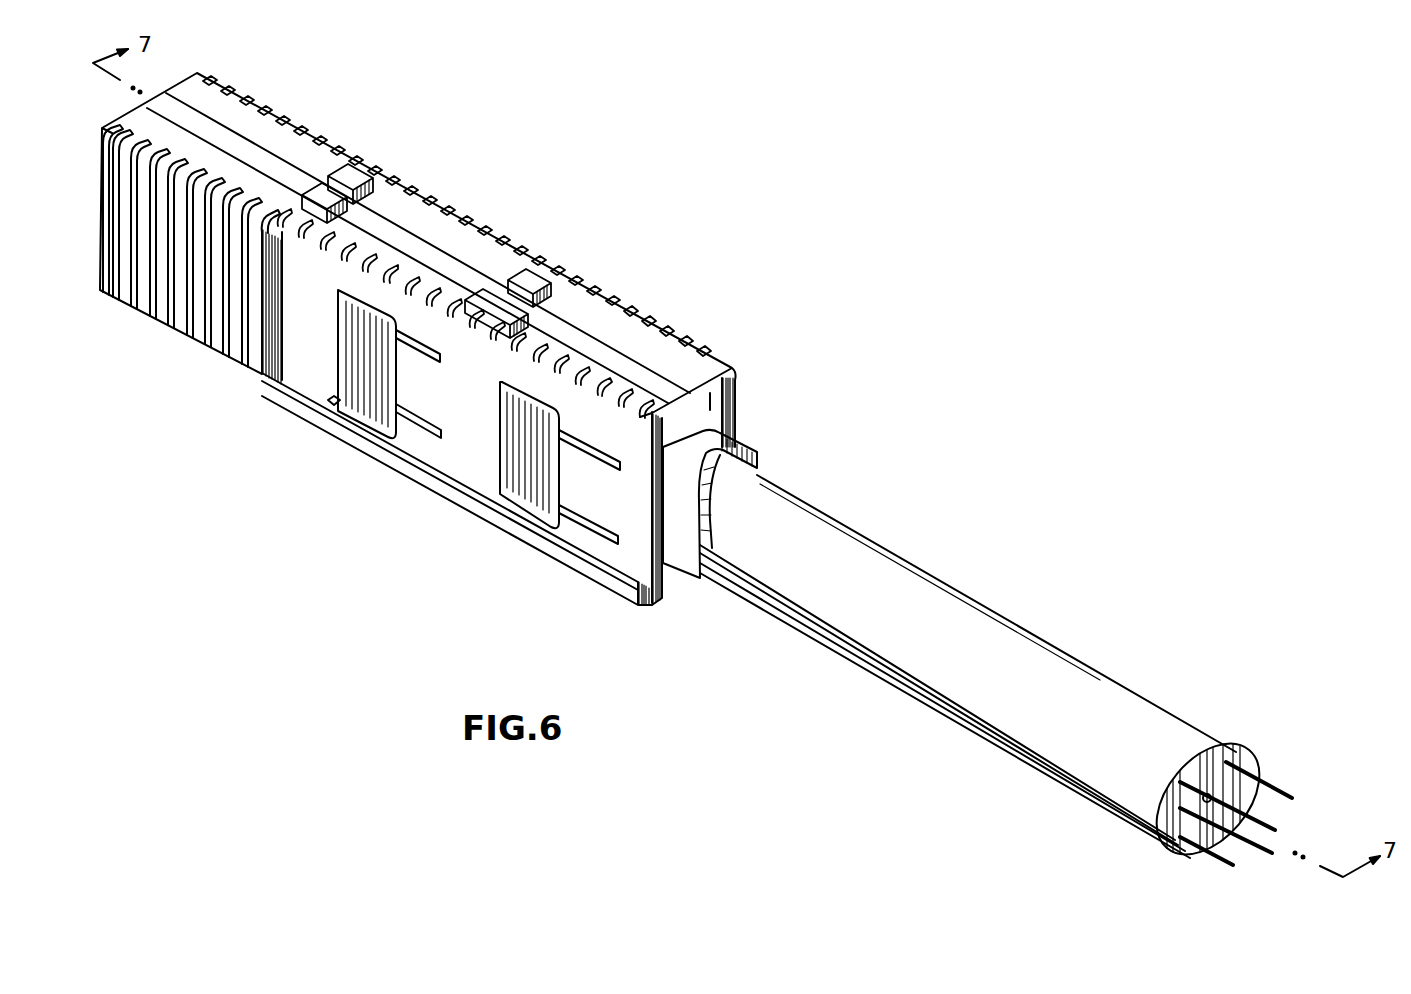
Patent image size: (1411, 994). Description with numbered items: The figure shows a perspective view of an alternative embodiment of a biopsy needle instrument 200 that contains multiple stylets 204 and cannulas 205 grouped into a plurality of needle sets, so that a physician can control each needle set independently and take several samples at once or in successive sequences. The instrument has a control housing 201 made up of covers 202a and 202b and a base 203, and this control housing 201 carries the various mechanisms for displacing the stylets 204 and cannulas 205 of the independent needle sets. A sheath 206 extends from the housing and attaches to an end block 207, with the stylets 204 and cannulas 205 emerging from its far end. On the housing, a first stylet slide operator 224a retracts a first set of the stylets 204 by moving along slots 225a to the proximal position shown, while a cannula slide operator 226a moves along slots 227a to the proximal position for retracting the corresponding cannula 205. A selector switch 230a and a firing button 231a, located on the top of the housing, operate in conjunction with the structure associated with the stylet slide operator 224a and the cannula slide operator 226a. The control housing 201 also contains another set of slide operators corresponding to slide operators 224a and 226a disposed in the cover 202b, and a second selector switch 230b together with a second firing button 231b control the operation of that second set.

The biopsy needle instrument 200 is at (678, 303).
The control housing 201 is at (708, 360).
The cover 202a is at (138, 124).
The cover 202b is at (427, 212).
The base 203 is at (457, 267).
The stylets 204 is at (1293, 793).
The cannulas 205 is at (1257, 780).
The sheath 206 is at (952, 600).
The end block 207 is at (733, 447).
The stylet slide operator 224a is at (332, 407).
The slots 225a is at (426, 430).
The cannula slide operator 226a is at (500, 487).
The slots 227a is at (602, 523).
The selector switch 230a is at (498, 279).
The selector switch 230b is at (546, 287).
The firing button 231a is at (321, 188).
The firing button 231b is at (354, 184).